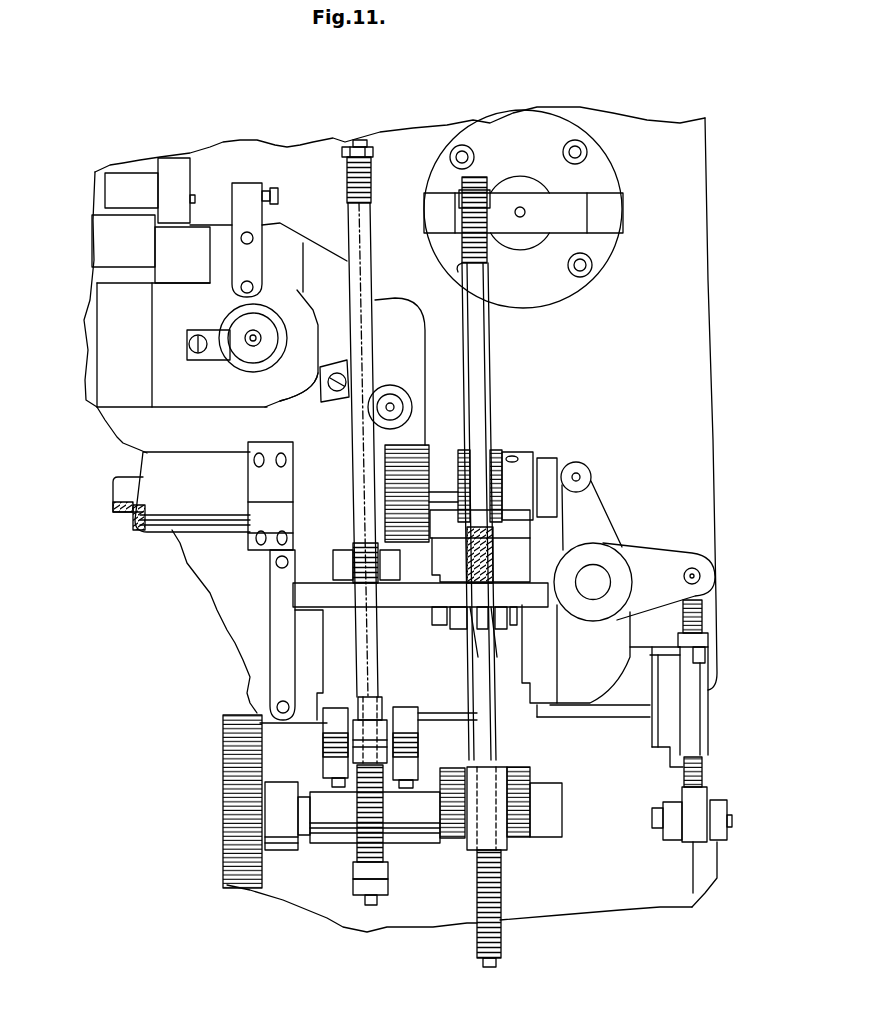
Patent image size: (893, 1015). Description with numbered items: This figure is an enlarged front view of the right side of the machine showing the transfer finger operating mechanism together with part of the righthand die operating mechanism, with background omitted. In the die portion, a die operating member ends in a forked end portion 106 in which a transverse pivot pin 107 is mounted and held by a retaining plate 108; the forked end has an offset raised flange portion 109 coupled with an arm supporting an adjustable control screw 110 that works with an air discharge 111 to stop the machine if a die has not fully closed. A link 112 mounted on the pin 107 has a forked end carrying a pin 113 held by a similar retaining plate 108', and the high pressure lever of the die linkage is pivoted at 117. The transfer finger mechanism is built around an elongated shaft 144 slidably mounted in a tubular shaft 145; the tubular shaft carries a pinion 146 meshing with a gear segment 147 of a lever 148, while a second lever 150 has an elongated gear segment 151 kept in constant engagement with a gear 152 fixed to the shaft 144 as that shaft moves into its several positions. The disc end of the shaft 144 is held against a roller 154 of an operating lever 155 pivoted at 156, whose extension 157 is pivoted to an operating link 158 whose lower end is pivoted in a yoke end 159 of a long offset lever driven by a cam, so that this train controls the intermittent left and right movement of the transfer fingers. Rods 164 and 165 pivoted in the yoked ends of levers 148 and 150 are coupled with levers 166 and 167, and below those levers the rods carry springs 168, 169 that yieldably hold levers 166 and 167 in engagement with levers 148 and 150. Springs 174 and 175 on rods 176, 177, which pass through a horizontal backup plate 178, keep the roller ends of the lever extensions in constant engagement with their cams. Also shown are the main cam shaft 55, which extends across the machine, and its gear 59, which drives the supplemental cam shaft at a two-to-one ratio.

The main cam shaft 55 is at (330, 832).
The gear 59 is at (238, 863).
The forked end portion 106 is at (168, 327).
The transverse pivot pin 107 is at (253, 353).
The retaining plate 108 is at (202, 383).
The retaining plate 108' is at (371, 359).
The offset raised flange portion 109 is at (280, 250).
The adjustable control screw 110 is at (272, 193).
The air discharge 111 is at (196, 198).
The link 112 is at (312, 376).
The pin 113 is at (395, 402).
The pivot 117 is at (540, 188).
The elongated shaft 144 is at (124, 513).
The tubular shaft 145 is at (165, 520).
The pinion 146 is at (436, 445).
The gear segment 147 is at (365, 620).
The lever 148 is at (335, 566).
The lever 150 is at (455, 622).
The elongated gear segment 151 is at (533, 530).
The gear 152 is at (498, 447).
The roller 154 is at (578, 462).
The operating lever 155 is at (586, 488).
The pivot 156 is at (600, 576).
The extension 157 is at (664, 558).
The operating link 158 is at (703, 618).
The yoke end 159 is at (720, 805).
The rod 164 is at (368, 895).
The rod 165 is at (488, 967).
The lever 166 is at (402, 708).
The lever 167 is at (520, 768).
The spring 168 is at (362, 836).
The spring 169 is at (477, 893).
The spring 174 is at (371, 188).
The spring 175 is at (461, 237).
The rod 176 is at (367, 246).
The rod 177 is at (480, 356).
The horizontal backup plate 178 is at (313, 607).